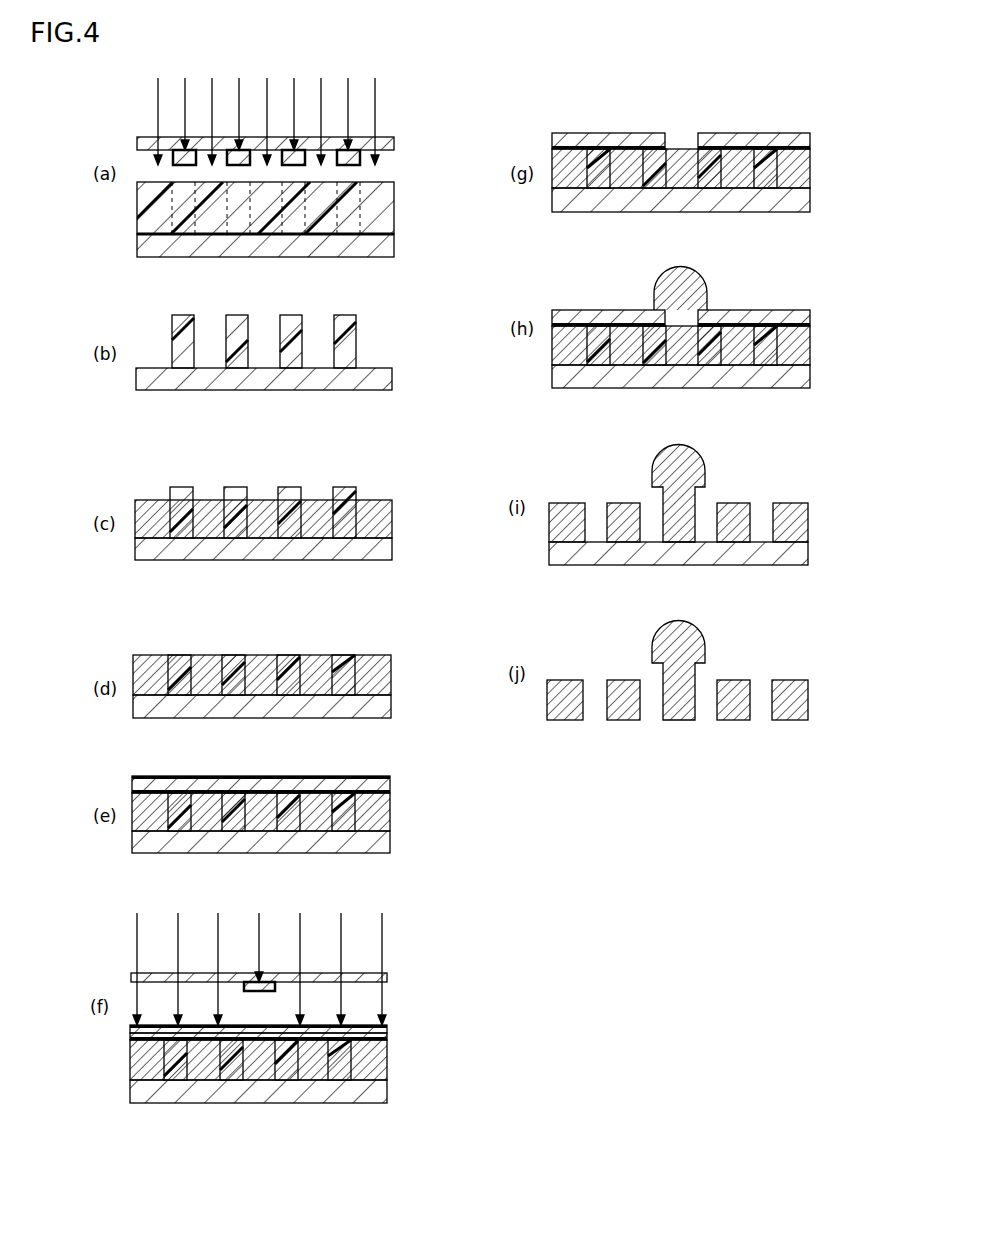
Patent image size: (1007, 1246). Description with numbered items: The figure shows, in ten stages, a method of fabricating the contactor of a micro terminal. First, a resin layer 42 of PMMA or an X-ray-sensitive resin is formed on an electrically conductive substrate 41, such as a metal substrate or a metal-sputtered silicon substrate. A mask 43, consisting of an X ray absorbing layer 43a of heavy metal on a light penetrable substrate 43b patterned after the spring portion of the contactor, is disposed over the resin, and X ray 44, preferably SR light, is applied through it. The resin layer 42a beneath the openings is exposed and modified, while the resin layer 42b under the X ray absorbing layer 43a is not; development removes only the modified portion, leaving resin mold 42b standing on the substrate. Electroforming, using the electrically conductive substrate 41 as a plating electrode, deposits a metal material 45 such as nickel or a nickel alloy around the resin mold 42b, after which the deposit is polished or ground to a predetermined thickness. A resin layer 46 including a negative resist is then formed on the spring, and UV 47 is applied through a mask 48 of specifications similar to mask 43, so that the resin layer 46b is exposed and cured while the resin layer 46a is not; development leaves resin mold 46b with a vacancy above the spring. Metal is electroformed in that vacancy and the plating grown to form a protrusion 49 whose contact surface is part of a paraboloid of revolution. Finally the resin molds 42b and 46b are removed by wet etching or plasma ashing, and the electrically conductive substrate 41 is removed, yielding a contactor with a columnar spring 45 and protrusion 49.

The electrically conductive substrate 41 is at (380, 248).
The resin layer 42 is at (311, 208).
The exposed resin layer portion 42a is at (378, 222).
The resin mold 42b is at (350, 201).
The mask 43 is at (311, 158).
The X ray absorbing layer 43a is at (352, 165).
The light penetrable substrate 43b is at (383, 146).
The X ray 44 is at (375, 108).
The metal material 45 is at (377, 521).
The resin layer 46 is at (375, 787).
The unexposed resin layer portion 46a is at (262, 1027).
The resin mold 46b is at (385, 1035).
The UV 47 is at (383, 938).
The mask 48 is at (387, 982).
The protrusion 49 is at (688, 290).